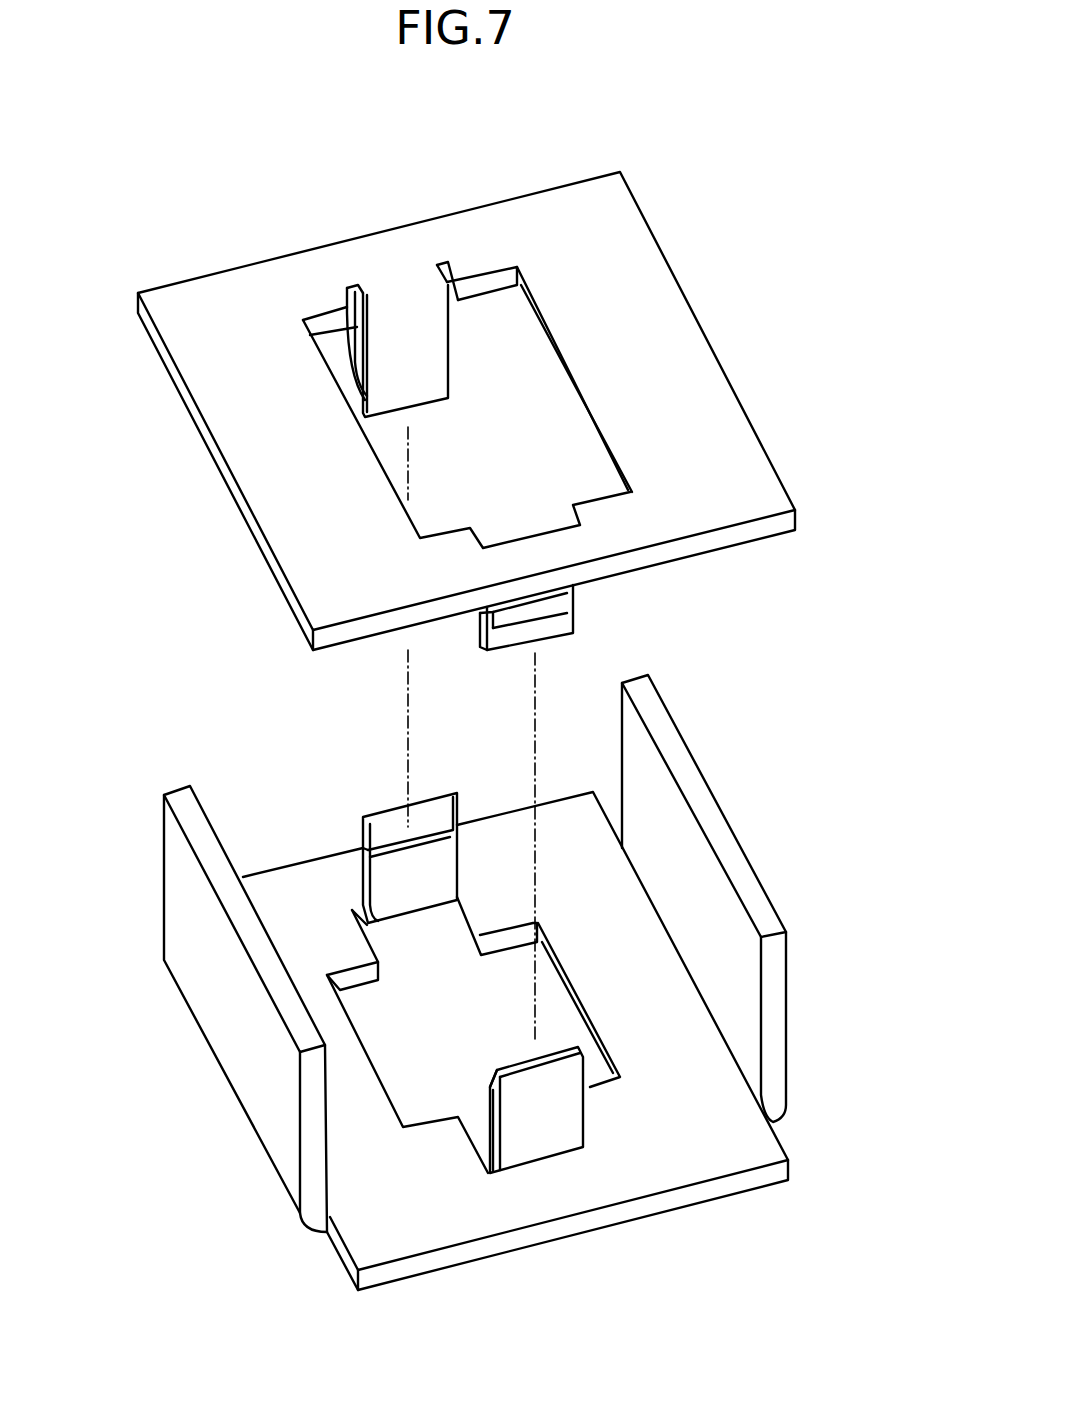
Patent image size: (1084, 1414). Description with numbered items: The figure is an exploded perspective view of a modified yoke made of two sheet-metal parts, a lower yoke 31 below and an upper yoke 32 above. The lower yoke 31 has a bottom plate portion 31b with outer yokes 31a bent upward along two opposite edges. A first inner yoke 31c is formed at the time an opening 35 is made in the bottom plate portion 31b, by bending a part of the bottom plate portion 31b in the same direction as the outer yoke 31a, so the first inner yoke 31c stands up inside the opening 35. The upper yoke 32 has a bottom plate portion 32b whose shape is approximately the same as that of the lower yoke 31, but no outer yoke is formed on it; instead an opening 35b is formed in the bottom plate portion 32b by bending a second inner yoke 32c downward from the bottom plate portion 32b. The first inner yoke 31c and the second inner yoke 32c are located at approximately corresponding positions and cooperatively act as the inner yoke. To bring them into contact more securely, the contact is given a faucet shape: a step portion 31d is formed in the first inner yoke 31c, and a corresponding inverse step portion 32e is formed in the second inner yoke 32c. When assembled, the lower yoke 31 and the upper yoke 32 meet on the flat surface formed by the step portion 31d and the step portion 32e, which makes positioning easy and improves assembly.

The lower yoke 31 is at (812, 983).
The outer yoke 31a is at (690, 872).
The bottom plate portion 31b is at (690, 1165).
The first inner yoke 31c is at (415, 885).
The step portion 31d is at (398, 821).
The upper yoke 32 is at (712, 268).
The bottom plate portion 32b is at (218, 318).
The second inner yoke 32c is at (412, 383).
The inverse step portion 32e is at (338, 350).
The opening 35 is at (428, 1103).
The opening 35b is at (487, 318).